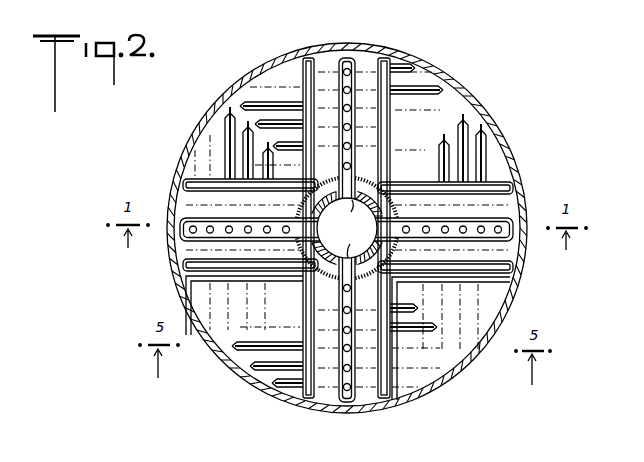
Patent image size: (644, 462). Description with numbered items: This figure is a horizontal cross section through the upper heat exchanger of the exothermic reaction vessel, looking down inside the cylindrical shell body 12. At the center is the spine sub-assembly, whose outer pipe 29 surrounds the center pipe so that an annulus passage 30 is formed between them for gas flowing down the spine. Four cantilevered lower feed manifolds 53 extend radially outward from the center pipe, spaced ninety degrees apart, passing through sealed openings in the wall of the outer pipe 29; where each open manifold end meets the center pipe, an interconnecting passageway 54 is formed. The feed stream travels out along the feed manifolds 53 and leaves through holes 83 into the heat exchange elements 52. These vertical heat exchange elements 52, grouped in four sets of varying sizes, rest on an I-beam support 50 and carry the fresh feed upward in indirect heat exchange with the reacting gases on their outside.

The cylindrical shell body 12 is at (443, 150).
The outer pipe 29 is at (374, 183).
The annulus passage 30 is at (314, 188).
The I-beam support 50 is at (303, 64).
The heat exchange element 52 is at (394, 68).
The lower feed manifold 53 is at (352, 57).
The interconnecting passageway 54 is at (369, 234).
The holes 83 is at (356, 127).